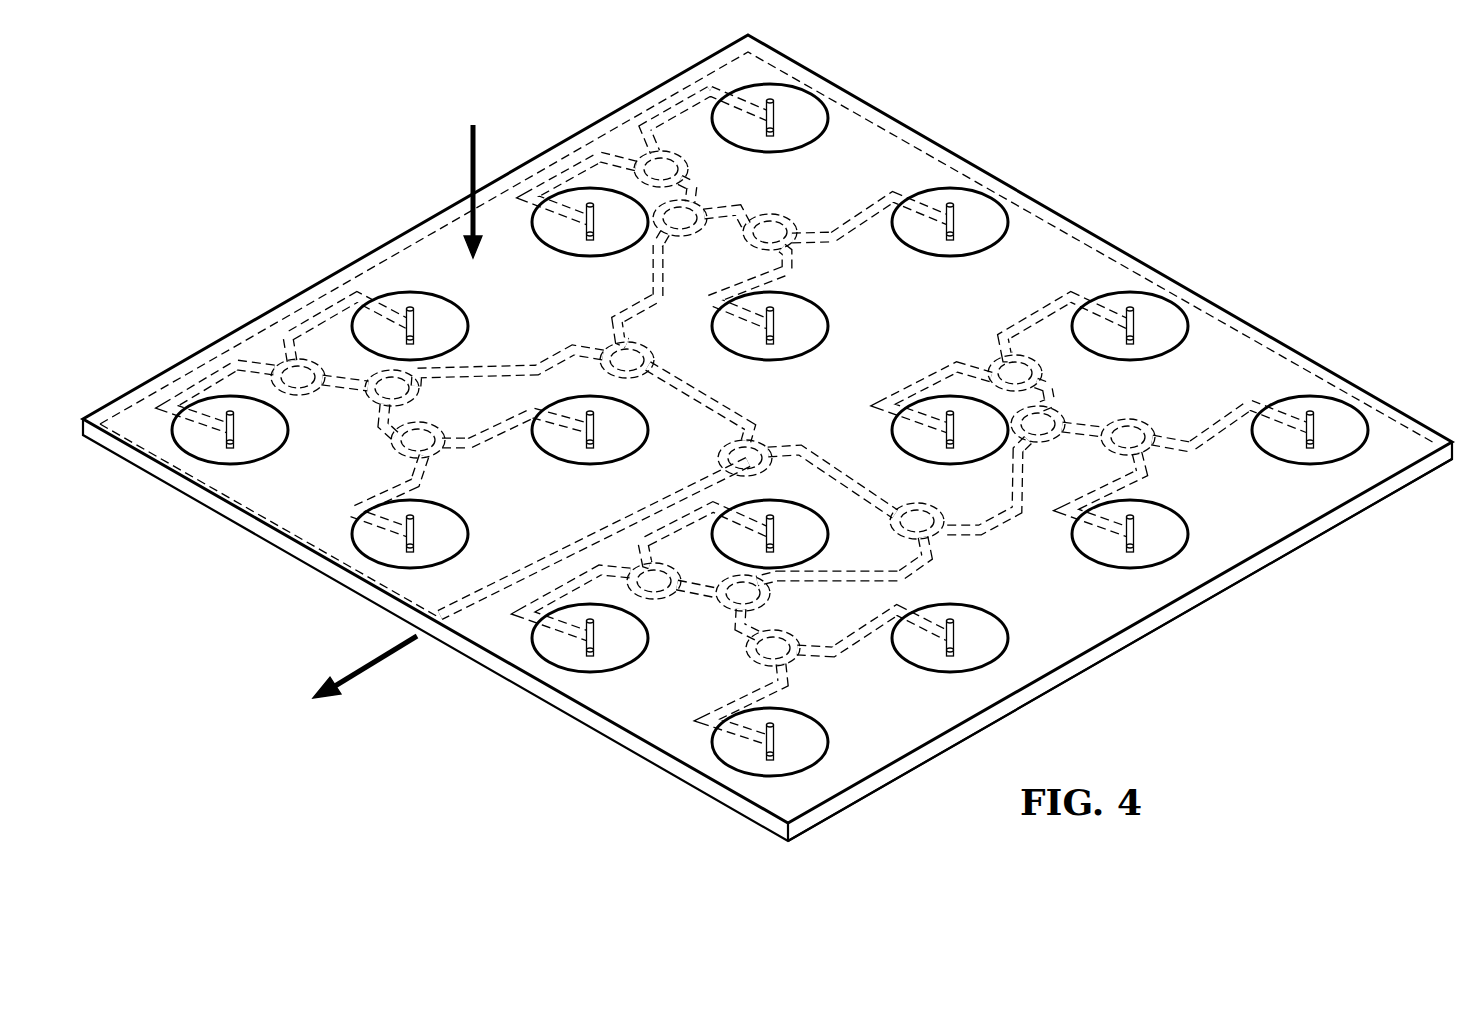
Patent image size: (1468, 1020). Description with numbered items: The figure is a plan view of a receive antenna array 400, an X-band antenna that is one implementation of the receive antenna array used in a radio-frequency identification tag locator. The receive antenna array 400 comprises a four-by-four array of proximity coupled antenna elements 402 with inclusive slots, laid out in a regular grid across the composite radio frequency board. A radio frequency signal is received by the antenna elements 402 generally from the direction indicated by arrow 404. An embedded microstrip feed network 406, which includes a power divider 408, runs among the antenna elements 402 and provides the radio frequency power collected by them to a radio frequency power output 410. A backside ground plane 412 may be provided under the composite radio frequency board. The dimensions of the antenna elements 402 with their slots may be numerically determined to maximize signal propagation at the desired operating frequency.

The receive antenna array 400 is at (1095, 236).
The antenna elements 402 is at (377, 552).
The arrow 404 is at (468, 167).
The embedded microstrip feed network 406 is at (568, 550).
The power divider 408 is at (1025, 323).
The radio frequency power output 410 is at (378, 662).
The backside ground plane 412 is at (1118, 640).